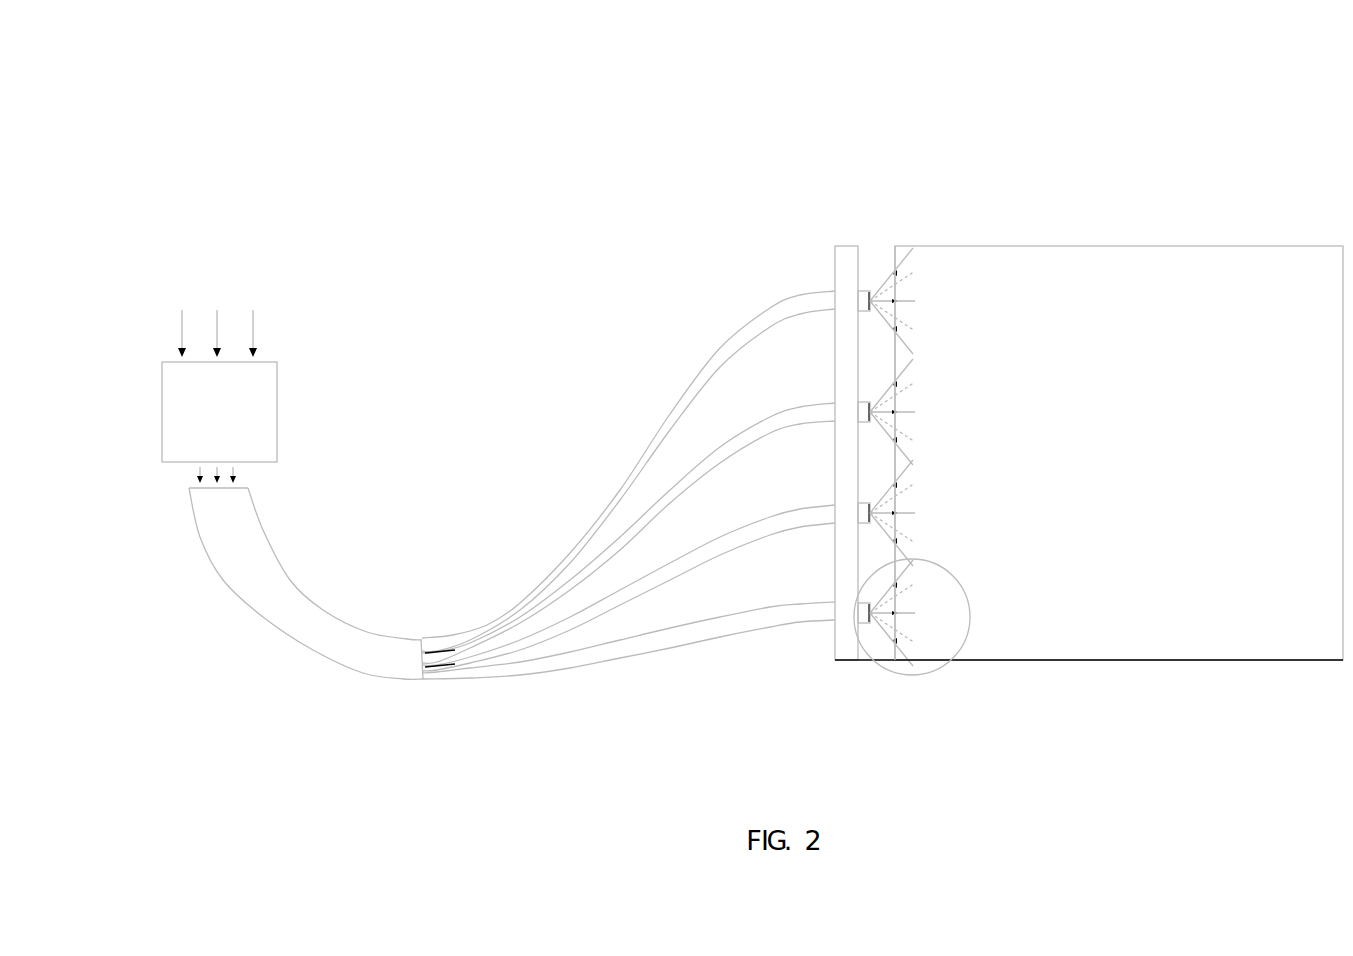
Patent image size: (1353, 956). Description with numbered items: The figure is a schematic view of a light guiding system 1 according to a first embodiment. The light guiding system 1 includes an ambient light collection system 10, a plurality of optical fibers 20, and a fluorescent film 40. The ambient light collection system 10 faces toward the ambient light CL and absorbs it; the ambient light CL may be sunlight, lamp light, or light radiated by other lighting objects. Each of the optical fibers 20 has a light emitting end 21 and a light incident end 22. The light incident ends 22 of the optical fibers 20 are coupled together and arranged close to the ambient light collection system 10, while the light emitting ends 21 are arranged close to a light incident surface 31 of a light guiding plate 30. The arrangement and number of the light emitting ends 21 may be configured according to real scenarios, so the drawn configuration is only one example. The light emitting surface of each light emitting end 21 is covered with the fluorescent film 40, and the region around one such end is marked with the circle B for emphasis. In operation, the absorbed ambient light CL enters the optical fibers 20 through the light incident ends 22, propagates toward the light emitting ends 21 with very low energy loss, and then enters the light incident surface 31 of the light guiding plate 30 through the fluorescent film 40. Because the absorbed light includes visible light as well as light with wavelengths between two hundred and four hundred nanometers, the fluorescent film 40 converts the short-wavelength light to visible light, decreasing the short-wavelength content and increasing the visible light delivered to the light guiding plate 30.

The light guiding system 1 is at (768, 148).
The ambient light collection system 10 is at (219, 412).
The ambient light CL is at (217, 376).
The optical fibers 20 is at (479, 521).
The light emitting end 21 is at (865, 624).
The light incident end 22 is at (192, 485).
The light guiding plate 30 is at (1089, 453).
The light incident surface 31 is at (895, 262).
The fluorescent film 40 is at (876, 628).
The enlarged region B is at (942, 668).